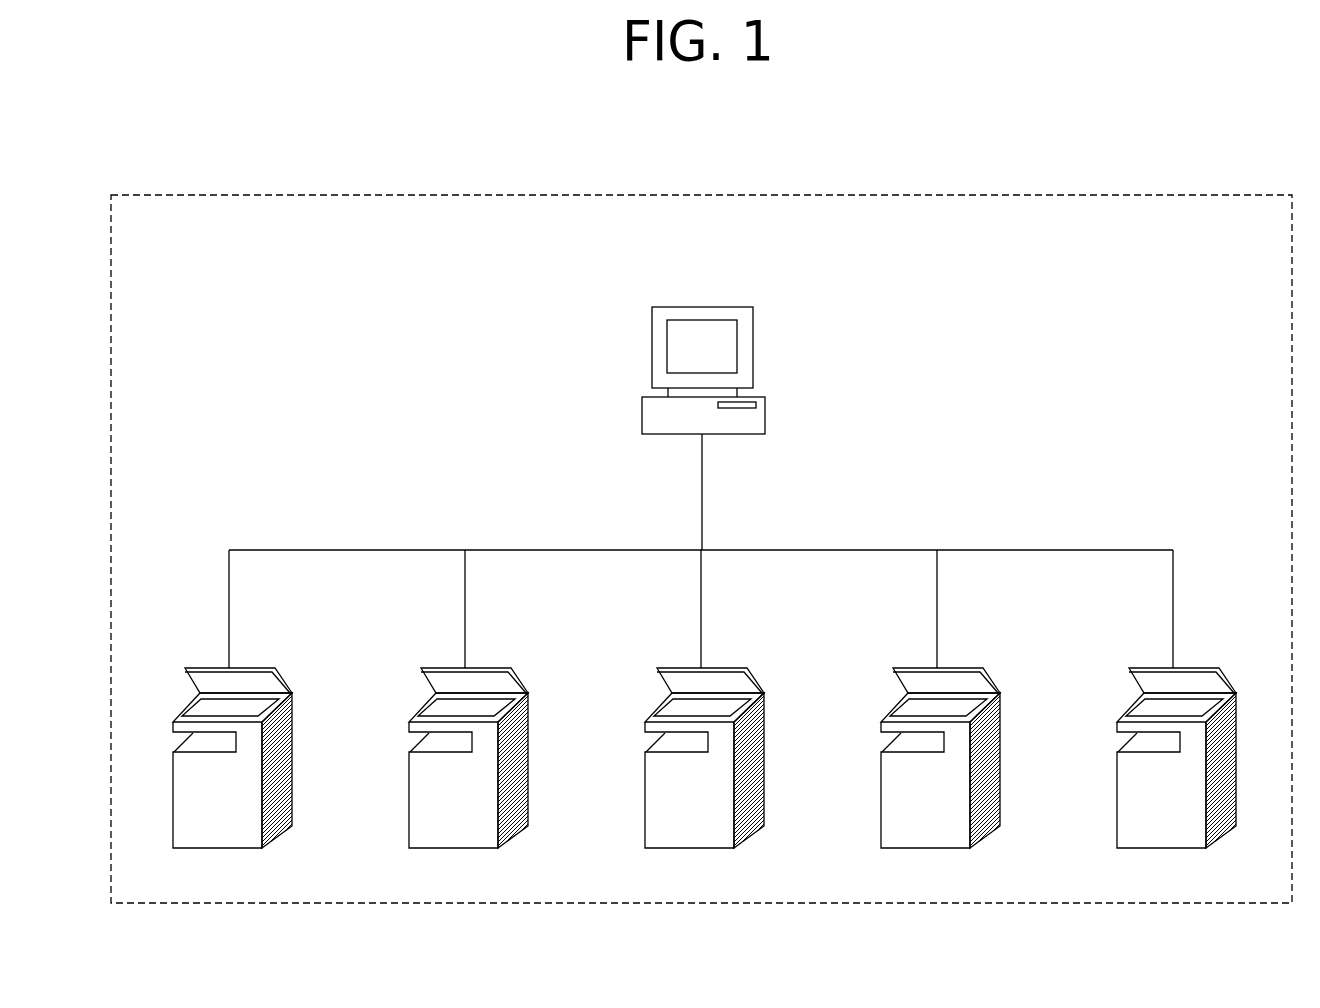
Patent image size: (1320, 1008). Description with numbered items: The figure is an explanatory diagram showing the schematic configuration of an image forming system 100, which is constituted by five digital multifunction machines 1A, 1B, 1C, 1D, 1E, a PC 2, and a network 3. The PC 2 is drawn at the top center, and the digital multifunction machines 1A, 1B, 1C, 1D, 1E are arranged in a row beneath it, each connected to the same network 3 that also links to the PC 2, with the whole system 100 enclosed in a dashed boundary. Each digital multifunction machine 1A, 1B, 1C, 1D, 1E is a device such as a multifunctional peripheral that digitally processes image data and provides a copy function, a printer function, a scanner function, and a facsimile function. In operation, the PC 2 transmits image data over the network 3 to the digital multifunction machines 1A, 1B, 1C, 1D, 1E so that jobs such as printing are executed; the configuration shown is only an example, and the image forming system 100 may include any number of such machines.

The image forming system 100 is at (1170, 150).
The PC 2 is at (726, 299).
The network 3 is at (825, 550).
The digital multifunction machine 1A is at (263, 650).
The digital multifunction machine 1B is at (512, 650).
The digital multifunction machine 1C is at (740, 648).
The digital multifunction machine 1D is at (973, 648).
The digital multifunction machine 1E is at (1208, 652).